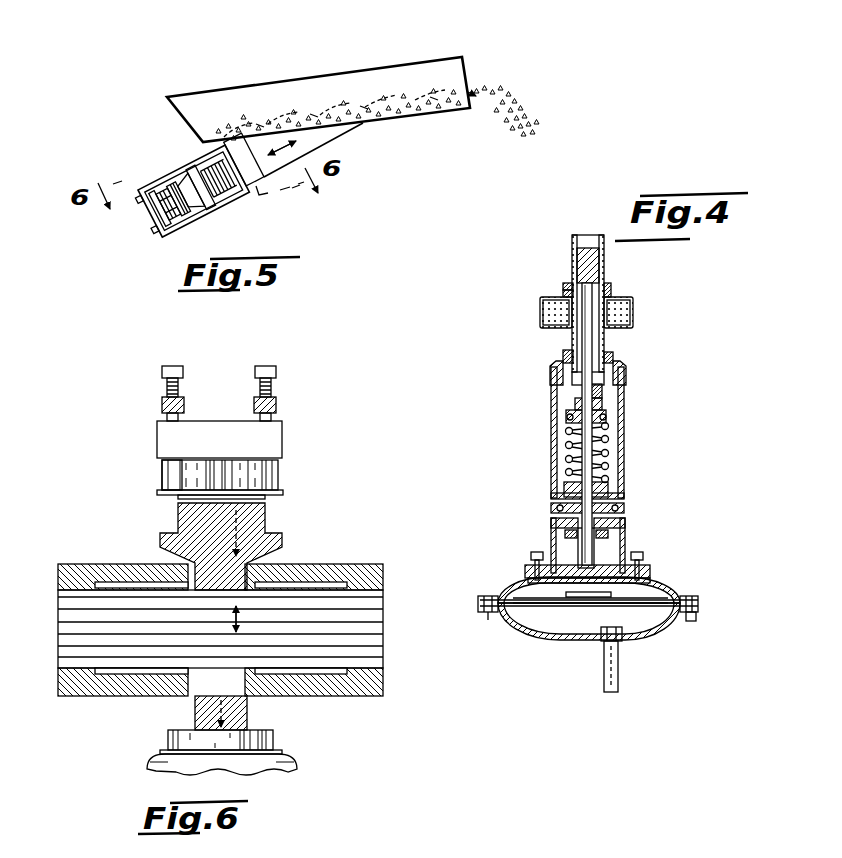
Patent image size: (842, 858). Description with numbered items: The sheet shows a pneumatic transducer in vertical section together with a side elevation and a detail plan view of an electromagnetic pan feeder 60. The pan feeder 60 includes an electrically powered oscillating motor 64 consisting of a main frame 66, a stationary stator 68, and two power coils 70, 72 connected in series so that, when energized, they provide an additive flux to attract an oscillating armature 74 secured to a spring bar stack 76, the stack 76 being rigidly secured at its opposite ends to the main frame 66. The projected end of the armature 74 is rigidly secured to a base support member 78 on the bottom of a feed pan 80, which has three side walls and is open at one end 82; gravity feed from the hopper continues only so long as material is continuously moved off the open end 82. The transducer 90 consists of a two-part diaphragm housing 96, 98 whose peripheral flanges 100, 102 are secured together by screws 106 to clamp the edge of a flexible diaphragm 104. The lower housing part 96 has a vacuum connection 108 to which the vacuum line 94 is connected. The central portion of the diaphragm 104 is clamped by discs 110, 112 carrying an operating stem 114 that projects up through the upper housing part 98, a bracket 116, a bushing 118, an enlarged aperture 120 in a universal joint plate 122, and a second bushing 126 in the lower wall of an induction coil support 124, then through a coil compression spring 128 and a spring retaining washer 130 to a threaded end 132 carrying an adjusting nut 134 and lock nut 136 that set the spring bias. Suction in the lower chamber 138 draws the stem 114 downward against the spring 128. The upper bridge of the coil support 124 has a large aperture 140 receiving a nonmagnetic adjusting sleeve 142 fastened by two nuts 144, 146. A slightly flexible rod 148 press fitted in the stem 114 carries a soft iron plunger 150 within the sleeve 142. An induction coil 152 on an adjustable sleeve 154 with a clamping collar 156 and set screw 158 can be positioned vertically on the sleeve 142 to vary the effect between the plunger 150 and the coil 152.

In FIG. 5, the electromagnetic pan feeder 60 is at (237, 69).
In FIG. 5, the oscillating motor 64 is at (153, 168).
In FIG. 6, the oscillating motor 64 is at (151, 525).
In FIG. 5, the main frame 66 is at (162, 172).
In FIG. 6, the main frame 66 is at (355, 573).
In FIG. 5, the stationary stator 68 is at (181, 229).
In FIG. 6, the stationary stator 68 is at (275, 443).
In FIG. 5, the power coil 70 is at (218, 178).
In FIG. 6, the power coil 70 is at (281, 473).
In FIG. 5, the power coil 72 is at (190, 206).
In FIG. 6, the power coil 72 is at (163, 471).
In FIG. 5, the oscillating armature 74 is at (188, 180).
In FIG. 6, the oscillating armature 74 is at (282, 541).
In FIG. 5, the spring bar stack 76 is at (244, 198).
In FIG. 6, the spring bar stack 76 is at (69, 634).
In FIG. 5, the base support member 78 is at (338, 129).
In FIG. 6, the base support member 78 is at (273, 742).
In FIG. 5, the feed pan 80 is at (324, 64).
In FIG. 5, the open end 82 is at (467, 74).
In FIG. 4, the transducer 90 is at (512, 410).
In FIG. 4, the vacuum line 94 is at (604, 682).
In FIG. 4, the lower diaphragm housing part 96 is at (661, 640).
In FIG. 4, the upper diaphragm housing part 98 is at (670, 593).
In FIG. 4, the peripheral flange 100 is at (704, 612).
In FIG. 4, the peripheral flange 102 is at (699, 605).
In FIG. 4, the flexible diaphragm 104 is at (521, 607).
In FIG. 4, the screws 106 is at (489, 620).
In FIG. 4, the vacuum connection 108 is at (622, 641).
In FIG. 4, the disc 110 is at (641, 580).
In FIG. 4, the disc 112 is at (527, 592).
In FIG. 4, the operating stem 114 is at (578, 545).
In FIG. 4, the bracket 116 is at (620, 518).
In FIG. 4, the bushing 118 is at (566, 532).
In FIG. 4, the enlarged aperture 120 is at (624, 496).
In FIG. 4, the universal joint plate 122 is at (625, 508).
In FIG. 4, the induction coil support 124 is at (621, 417).
In FIG. 4, the second bushing 126 is at (564, 490).
In FIG. 4, the coil compression spring 128 is at (609, 444).
In FIG. 4, the spring retaining washer 130 is at (566, 416).
In FIG. 4, the threaded end 132 is at (603, 390).
In FIG. 4, the adjusting nut 134 is at (576, 403).
In FIG. 4, the lock nut 136 is at (551, 372).
In FIG. 4, the lower chamber 138 is at (574, 632).
In FIG. 4, the large aperture 140 is at (599, 364).
In FIG. 4, the adjusting sleeve 142 is at (605, 258).
In FIG. 4, the nut 144 is at (563, 356).
In FIG. 4, the nut 146 is at (614, 356).
In FIG. 4, the rod 148 is at (593, 312).
In FIG. 4, the soft iron plunger 150 is at (590, 250).
In FIG. 4, the induction coil 152 is at (634, 310).
In FIG. 4, the adjustable sleeve 154 is at (547, 300).
In FIG. 4, the clamping collar 156 is at (568, 282).
In FIG. 4, the set screw 158 is at (564, 292).